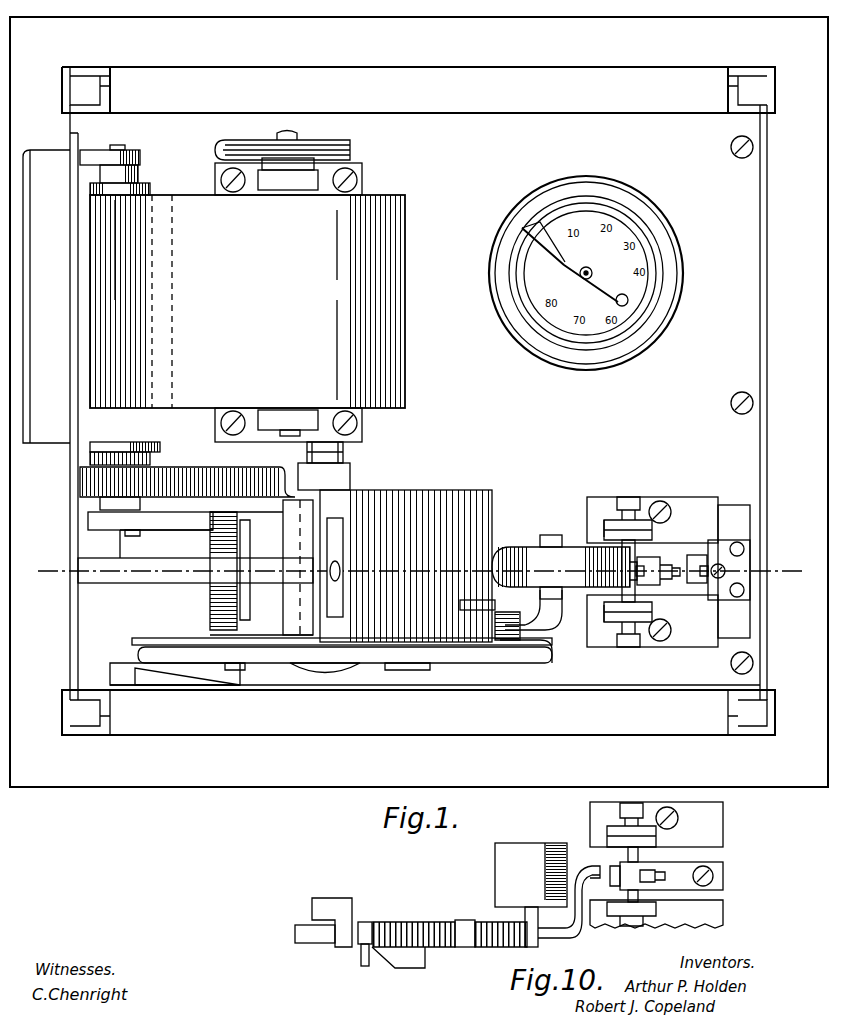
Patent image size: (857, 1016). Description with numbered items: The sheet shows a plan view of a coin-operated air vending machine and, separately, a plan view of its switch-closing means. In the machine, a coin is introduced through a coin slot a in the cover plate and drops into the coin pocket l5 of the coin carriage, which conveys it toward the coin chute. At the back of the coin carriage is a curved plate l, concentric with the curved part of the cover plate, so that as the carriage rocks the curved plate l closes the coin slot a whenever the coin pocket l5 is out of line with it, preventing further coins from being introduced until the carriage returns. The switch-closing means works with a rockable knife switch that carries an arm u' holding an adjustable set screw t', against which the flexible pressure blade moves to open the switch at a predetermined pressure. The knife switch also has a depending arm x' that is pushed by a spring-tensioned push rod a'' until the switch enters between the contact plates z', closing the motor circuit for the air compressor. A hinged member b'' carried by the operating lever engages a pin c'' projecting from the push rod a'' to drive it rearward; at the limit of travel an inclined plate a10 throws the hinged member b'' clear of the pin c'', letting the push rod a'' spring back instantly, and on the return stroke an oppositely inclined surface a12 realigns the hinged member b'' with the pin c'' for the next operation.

In FIG. 1, the coin slot a is at (419, 572).
In FIG. 1, the curved plate l is at (406, 566).
In FIG. 1, the coin pocket l5 is at (336, 535).
In FIG. 1, the arm u' is at (672, 526).
In FIG. 1, the contact plates z' is at (717, 525).
In FIG. 1, the contact screw t is at (661, 596).
In FIG. 1, the inclined surface a12 is at (175, 676).
In FIG. 10, the spring-tensioned push rod a'' is at (570, 878).
In FIG. 10, the depending arm x' is at (554, 850).
In FIG. 10, the set screw t' is at (666, 852).
In FIG. 10, the hinged member b'' is at (286, 915).
In FIG. 10, the pin c'' is at (367, 967).
In FIG. 10, the inclined plate a10 is at (408, 958).